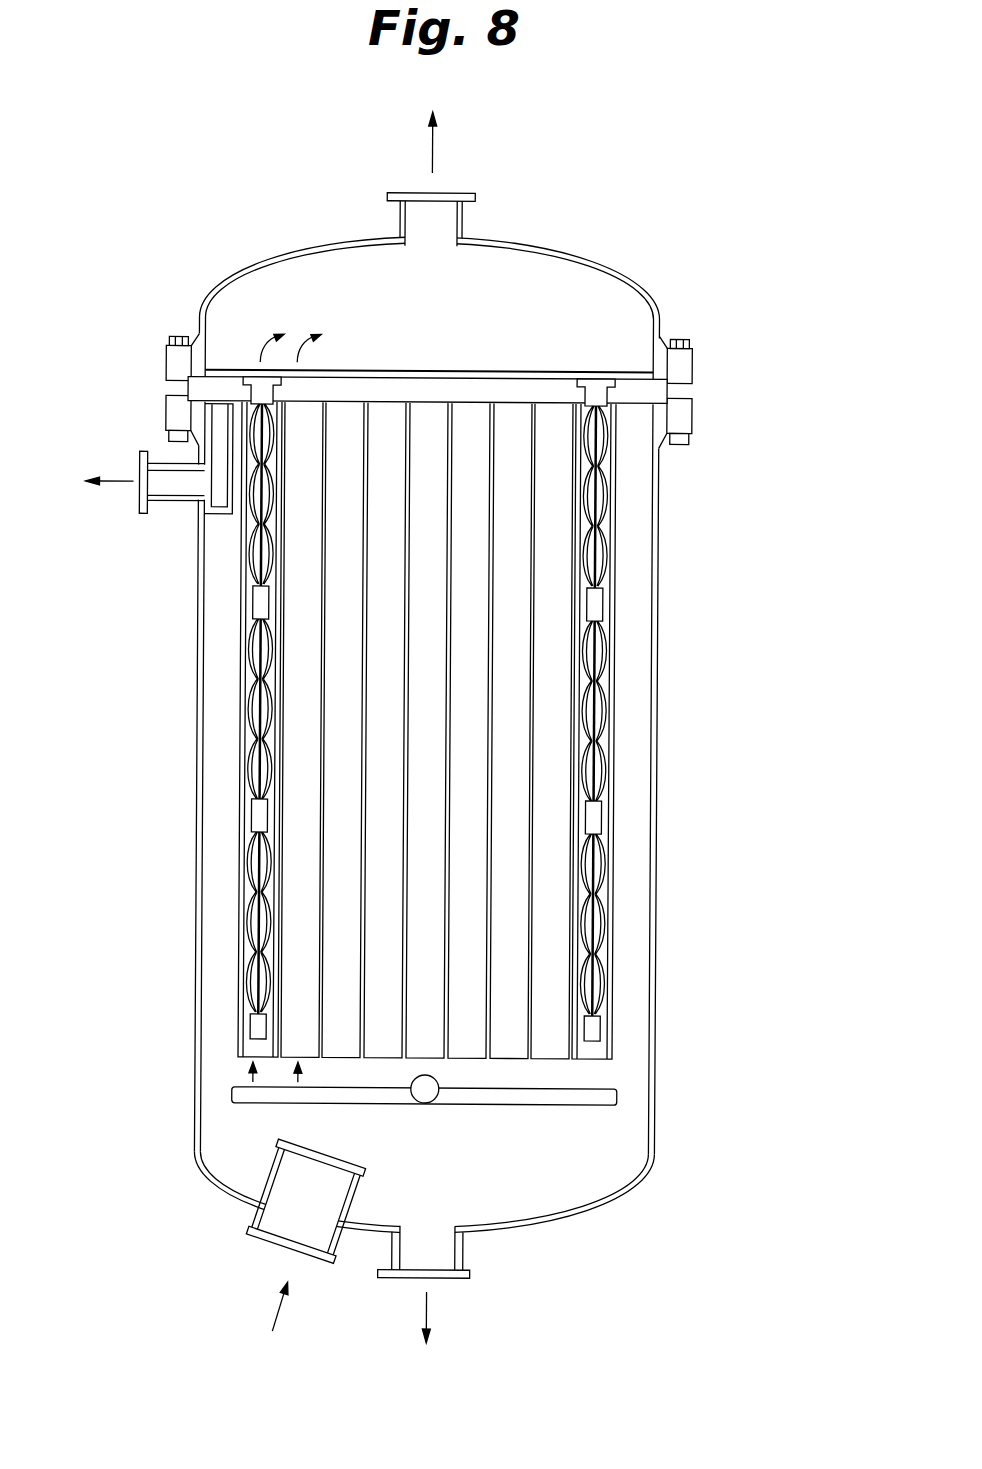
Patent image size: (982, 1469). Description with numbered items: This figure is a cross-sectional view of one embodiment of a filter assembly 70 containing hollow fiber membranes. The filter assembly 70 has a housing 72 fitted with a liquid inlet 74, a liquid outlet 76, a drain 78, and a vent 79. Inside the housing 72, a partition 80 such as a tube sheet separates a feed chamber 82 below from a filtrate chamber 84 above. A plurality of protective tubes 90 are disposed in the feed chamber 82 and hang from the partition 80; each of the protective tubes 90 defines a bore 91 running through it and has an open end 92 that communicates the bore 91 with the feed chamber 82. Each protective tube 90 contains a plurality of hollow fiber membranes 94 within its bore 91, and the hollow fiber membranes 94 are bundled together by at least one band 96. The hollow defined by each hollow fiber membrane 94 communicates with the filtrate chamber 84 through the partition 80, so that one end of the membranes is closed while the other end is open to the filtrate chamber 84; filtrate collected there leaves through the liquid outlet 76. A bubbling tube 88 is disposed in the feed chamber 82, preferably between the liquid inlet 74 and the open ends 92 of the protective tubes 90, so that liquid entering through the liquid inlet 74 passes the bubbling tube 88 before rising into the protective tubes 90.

The filter assembly 70 is at (705, 1235).
The housing 72 is at (657, 1104).
The liquid inlet 74 is at (270, 1218).
The liquid outlet 76 is at (460, 192).
The drain 78 is at (457, 1248).
The vent 79 is at (163, 507).
The partition 80 is at (655, 390).
The feed chamber 82 is at (646, 665).
The filtrate chamber 84 is at (607, 293).
The bubbling tube 88 is at (586, 1107).
The protective tube 90 is at (515, 733).
The bore 91 is at (556, 1028).
The open end 92 is at (548, 1063).
The hollow fiber membrane 94 is at (580, 848).
The band 96 is at (597, 605).